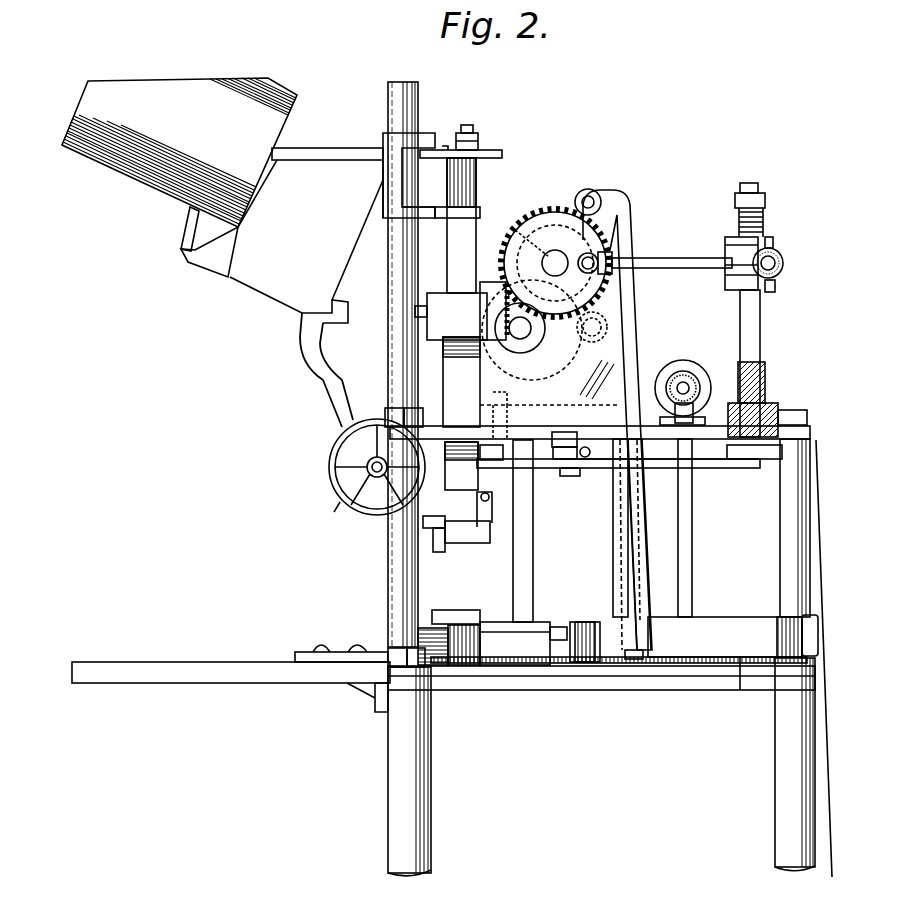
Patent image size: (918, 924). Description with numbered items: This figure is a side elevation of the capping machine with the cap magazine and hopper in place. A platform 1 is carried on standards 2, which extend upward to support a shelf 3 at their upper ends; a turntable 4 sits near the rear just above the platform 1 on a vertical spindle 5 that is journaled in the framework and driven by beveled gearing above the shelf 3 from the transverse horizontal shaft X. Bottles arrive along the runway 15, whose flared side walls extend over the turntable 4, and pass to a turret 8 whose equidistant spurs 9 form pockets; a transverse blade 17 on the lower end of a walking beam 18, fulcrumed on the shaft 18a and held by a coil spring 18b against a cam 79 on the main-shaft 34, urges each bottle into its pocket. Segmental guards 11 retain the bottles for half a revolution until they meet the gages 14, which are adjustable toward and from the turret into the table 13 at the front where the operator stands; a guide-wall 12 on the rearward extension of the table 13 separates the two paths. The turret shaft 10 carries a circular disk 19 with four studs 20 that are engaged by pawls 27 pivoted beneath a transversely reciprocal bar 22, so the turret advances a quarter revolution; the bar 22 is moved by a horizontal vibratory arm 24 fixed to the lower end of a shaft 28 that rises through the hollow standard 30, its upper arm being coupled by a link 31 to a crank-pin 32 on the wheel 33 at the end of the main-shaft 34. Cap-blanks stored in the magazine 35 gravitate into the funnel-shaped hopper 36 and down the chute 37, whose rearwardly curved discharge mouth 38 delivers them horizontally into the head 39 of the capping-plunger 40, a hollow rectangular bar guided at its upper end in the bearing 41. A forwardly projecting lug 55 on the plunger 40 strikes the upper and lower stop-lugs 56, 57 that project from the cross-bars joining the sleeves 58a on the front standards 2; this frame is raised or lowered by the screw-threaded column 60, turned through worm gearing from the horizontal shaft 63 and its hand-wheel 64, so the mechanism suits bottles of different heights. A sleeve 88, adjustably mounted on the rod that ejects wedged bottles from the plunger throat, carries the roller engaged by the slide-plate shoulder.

The platform 1 is at (514, 680).
The standards 2 is at (393, 790).
The shelf 3 is at (457, 427).
The turntable 4 is at (730, 662).
The shaft or spindle 5 is at (694, 546).
The turret 8 is at (556, 626).
The spurs 9 is at (582, 626).
The turret shafts 10 is at (536, 563).
The segmental guards 11 is at (515, 643).
The guide-wall 12 is at (455, 612).
The table 13 is at (204, 662).
The gages 14 is at (418, 636).
The runway 15 is at (770, 620).
The transverse blade 17 is at (642, 622).
The walking beams 18 is at (634, 222).
The shaft 18a is at (590, 200).
The coil springs 18b is at (596, 379).
The circular disks 19 is at (508, 468).
The studs 20 is at (480, 466).
The transversely reciprocal bar 22 is at (562, 434).
The horizontal vibratory arm 24 is at (705, 468).
The pawls 27 is at (577, 470).
The shaft 28 is at (758, 375).
The hollow standard 30 is at (740, 306).
The link 31 is at (679, 258).
The crank-pin 32 is at (586, 257).
The wheel 33 is at (544, 330).
The main-shaft 34 is at (531, 241).
The magazine 35 is at (179, 152).
The hopper 36 is at (282, 235).
The chute 37 is at (316, 386).
The discharge mouth 38 is at (424, 522).
The head 39 is at (466, 532).
The capping-plunger 40 is at (474, 235).
The bearing 41 is at (482, 209).
The lug 55 is at (468, 158).
The upper stop-lug 56 is at (437, 133).
The lower stop-lug 57 is at (420, 213).
The sleeves 58a is at (394, 172).
The internally screw-threaded column 60 is at (390, 318).
The horizontal shaft 63 is at (370, 470).
The hand-wheel 64 is at (350, 500).
The cams 79 is at (557, 220).
The sleeve 88 is at (472, 140).
The transverse horizontal shaft X is at (692, 378).